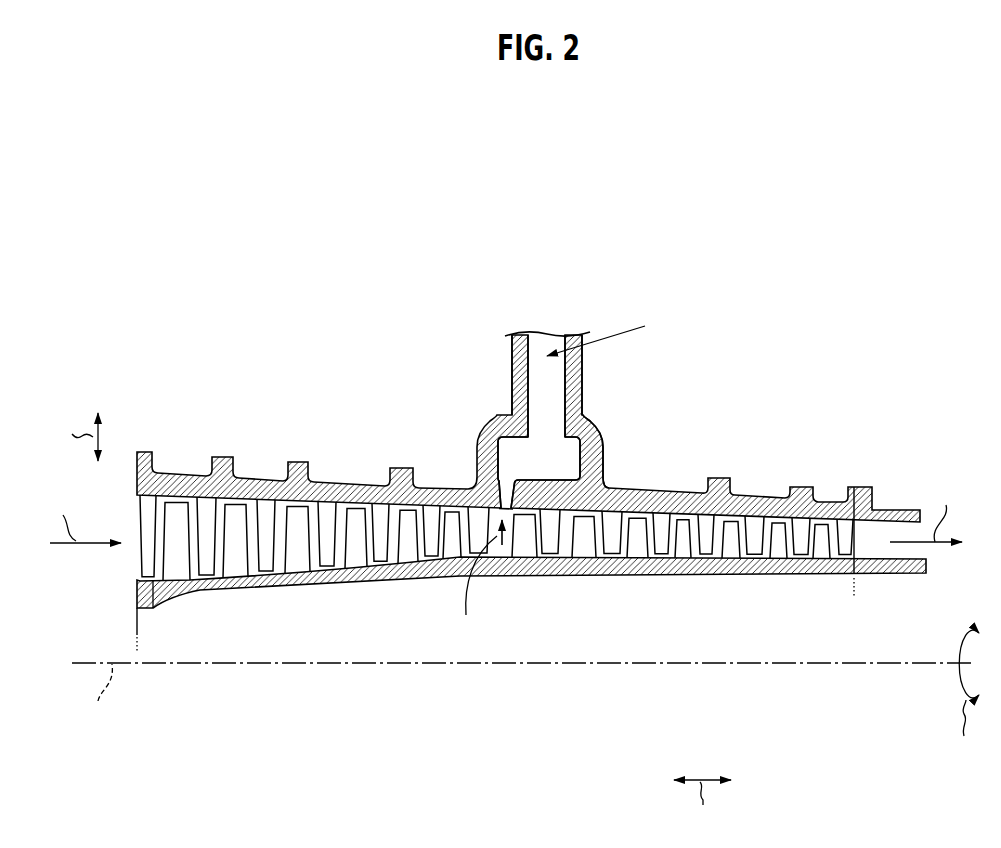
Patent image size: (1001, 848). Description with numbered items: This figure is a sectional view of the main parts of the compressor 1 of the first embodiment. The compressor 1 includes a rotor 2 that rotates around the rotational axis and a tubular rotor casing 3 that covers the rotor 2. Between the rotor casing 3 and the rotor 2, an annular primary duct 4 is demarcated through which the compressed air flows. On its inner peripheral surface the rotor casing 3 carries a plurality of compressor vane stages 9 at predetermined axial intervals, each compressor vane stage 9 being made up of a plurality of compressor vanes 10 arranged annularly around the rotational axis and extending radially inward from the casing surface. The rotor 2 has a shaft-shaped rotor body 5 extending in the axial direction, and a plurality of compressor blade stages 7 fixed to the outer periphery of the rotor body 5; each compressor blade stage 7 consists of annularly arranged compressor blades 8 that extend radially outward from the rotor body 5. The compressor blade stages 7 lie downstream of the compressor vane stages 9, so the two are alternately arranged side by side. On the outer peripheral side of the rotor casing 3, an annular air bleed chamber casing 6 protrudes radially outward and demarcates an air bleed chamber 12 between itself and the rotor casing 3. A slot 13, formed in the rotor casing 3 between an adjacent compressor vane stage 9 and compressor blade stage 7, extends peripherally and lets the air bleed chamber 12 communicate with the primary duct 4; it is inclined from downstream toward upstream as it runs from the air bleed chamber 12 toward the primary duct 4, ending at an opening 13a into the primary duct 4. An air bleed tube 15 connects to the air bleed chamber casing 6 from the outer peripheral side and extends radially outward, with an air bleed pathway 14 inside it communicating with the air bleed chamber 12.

The compressor 1 is at (890, 414).
The rotor 2 is at (127, 594).
The rotor casing 3 is at (722, 471).
The primary duct 4 is at (189, 510).
The rotor body 5 is at (743, 569).
The air bleed chamber casing 6 is at (588, 436).
The compressor blade stage 7 is at (297, 560).
The compressor blade 8 is at (523, 548).
The compressor vane stage 9 is at (267, 508).
The compressor vane 10 is at (476, 507).
The air bleed chamber 12 is at (571, 453).
The slot 13 is at (512, 478).
The opening 13a is at (506, 513).
The air bleed pathway 14 is at (608, 333).
The air bleed tube 15 is at (583, 388).